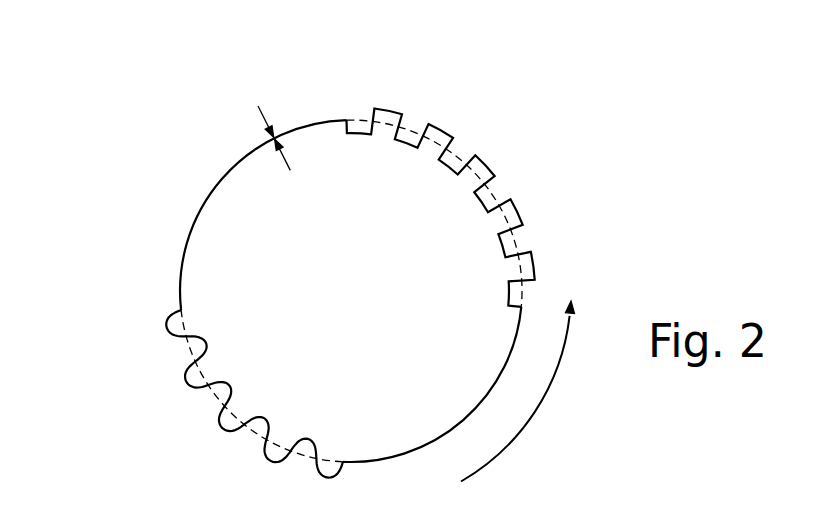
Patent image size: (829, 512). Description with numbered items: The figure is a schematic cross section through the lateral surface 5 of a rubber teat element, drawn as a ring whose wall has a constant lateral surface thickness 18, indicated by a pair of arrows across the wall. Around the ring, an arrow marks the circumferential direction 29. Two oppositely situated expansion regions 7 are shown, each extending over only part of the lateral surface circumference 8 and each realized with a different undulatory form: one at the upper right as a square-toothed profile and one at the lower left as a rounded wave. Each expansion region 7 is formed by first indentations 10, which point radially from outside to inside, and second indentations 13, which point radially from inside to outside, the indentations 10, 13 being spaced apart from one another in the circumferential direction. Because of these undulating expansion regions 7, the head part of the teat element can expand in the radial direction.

The lateral surface 5 is at (271, 291).
The expansion region 7 is at (528, 185).
The lateral surface circumference 8 is at (207, 197).
The first indentations 10 is at (456, 160).
The second indentations 13 is at (505, 218).
The lateral surface thickness 18 is at (265, 112).
The circumferential direction 29 is at (541, 410).